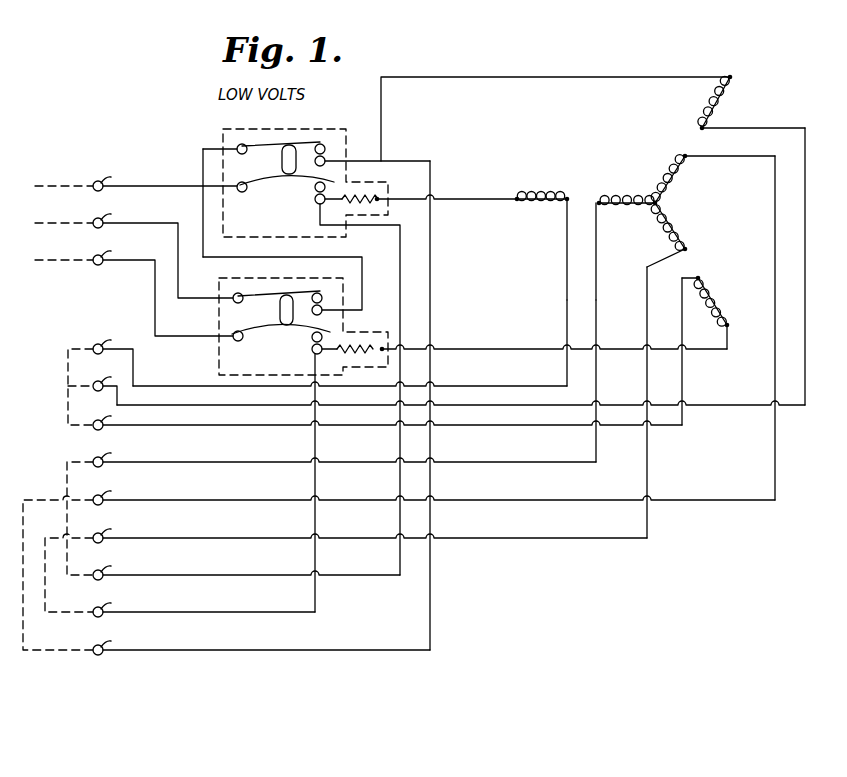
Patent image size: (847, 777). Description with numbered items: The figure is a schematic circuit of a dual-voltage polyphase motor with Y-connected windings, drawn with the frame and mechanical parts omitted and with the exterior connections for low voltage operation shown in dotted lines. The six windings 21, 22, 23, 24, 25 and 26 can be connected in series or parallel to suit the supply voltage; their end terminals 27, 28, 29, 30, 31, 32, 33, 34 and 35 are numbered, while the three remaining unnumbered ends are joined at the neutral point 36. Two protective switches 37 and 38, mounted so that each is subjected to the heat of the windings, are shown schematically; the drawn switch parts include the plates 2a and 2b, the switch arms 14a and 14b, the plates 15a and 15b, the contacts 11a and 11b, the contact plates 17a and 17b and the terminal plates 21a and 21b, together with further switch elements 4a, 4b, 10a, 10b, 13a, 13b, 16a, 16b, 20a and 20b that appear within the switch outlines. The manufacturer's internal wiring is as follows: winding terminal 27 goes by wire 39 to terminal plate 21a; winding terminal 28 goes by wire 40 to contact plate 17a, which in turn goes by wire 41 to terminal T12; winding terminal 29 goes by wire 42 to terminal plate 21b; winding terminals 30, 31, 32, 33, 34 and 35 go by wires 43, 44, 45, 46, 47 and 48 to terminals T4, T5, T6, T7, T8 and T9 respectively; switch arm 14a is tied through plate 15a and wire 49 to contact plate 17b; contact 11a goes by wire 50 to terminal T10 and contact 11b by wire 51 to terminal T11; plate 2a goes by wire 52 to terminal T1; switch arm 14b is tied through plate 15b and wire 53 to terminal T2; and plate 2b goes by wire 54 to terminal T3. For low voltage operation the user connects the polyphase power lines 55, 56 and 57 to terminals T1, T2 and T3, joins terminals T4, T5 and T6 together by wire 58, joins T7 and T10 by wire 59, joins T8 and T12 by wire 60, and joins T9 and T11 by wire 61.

The motor terminal T1 is at (112, 177).
The motor terminal T2 is at (112, 214).
The motor terminal T3 is at (112, 251).
The motor terminal T4 is at (330, 356).
The motor terminal T5 is at (449, 384).
The motor terminal T6 is at (387, 416).
The motor terminal T7 is at (344, 453).
The motor terminal T8 is at (434, 491).
The motor terminal T9 is at (370, 529).
The motor terminal T10 is at (246, 566).
The motor terminal T11 is at (204, 603).
The motor terminal T12 is at (261, 641).
The plate 2a is at (241, 192).
The plate 2b is at (238, 341).
The relay armature 4a is at (260, 177).
The relay armature 4b is at (254, 327).
The contact 10a is at (314, 188).
The contact 10b is at (312, 337).
The contact 11a is at (314, 201).
The contact 11b is at (312, 349).
The relay coil 13a is at (282, 161).
The relay coil 13b is at (279, 314).
The switch arm 14a is at (276, 144).
The switch arm 14b is at (261, 293).
The plate 15a is at (242, 144).
The plate 15b is at (232, 296).
The contact 16a is at (326, 149).
The contact 16b is at (322, 298).
The contact plate 17a is at (326, 162).
The contact plate 17b is at (322, 310).
The resistor 20a is at (364, 206).
The resistor 20b is at (346, 358).
The terminal plate 21a is at (385, 200).
The terminal plate 21b is at (389, 349).
The winding 21 is at (542, 195).
The winding 22 is at (723, 102).
The winding 23 is at (716, 303).
The winding 24 is at (636, 191).
The winding 25 is at (678, 170).
The winding 26 is at (679, 228).
The winding terminal 27 is at (515, 201).
The winding terminal 28 is at (731, 78).
The winding terminal 29 is at (728, 325).
The winding terminal 30 is at (569, 197).
The winding terminal 31 is at (700, 128).
The winding terminal 32 is at (699, 278).
The winding terminal 33 is at (599, 200).
The winding terminal 34 is at (683, 156).
The winding terminal 35 is at (687, 250).
The neutral point 36 is at (658, 204).
The protective switch 37 is at (217, 131).
The protective switch 38 is at (216, 317).
The wire 39 is at (467, 198).
The wire 40 is at (550, 78).
The wire 41 is at (431, 258).
The wire 42 is at (480, 339).
The wire 43 is at (566, 271).
The wire 44 is at (804, 128).
The wire 45 is at (683, 377).
The wire 46 is at (597, 272).
The wire 47 is at (774, 199).
The wire 48 is at (647, 301).
The wire 49 is at (303, 257).
The wire 50 is at (400, 247).
The wire 51 is at (316, 442).
The wire 52 is at (152, 187).
The wire 53 is at (152, 224).
The wire 54 is at (152, 261).
The low voltage power line 55 is at (57, 185).
The low voltage power line 56 is at (57, 222).
The low voltage power line 57 is at (57, 259).
The wire 58 is at (67, 372).
The wire 59 is at (67, 482).
The wire 60 is at (23, 532).
The wire 61 is at (48, 612).